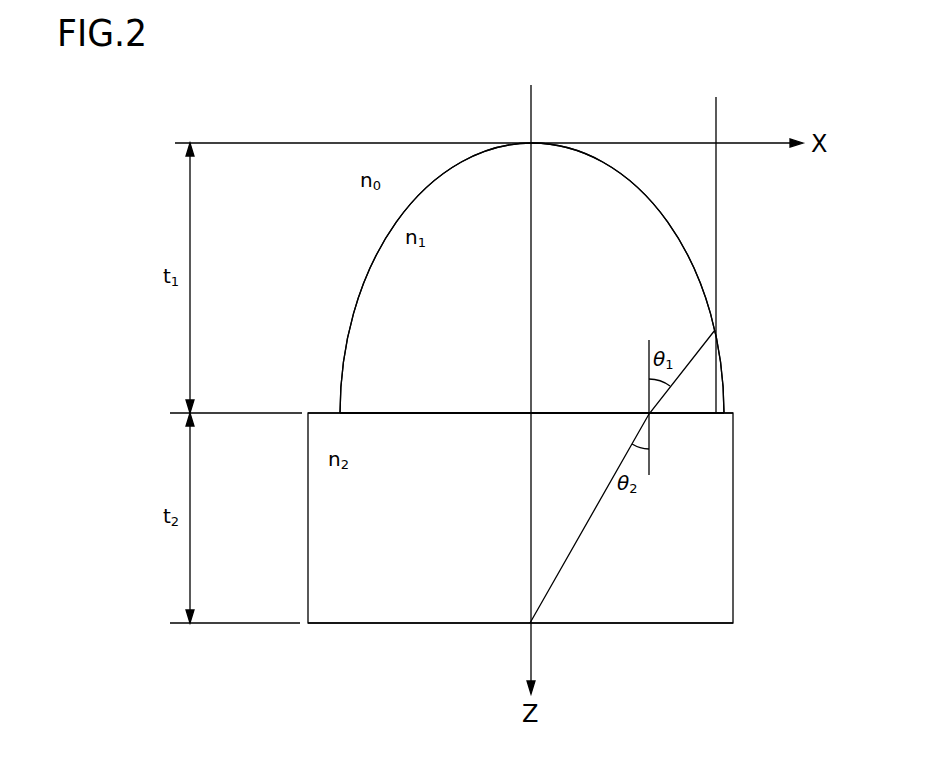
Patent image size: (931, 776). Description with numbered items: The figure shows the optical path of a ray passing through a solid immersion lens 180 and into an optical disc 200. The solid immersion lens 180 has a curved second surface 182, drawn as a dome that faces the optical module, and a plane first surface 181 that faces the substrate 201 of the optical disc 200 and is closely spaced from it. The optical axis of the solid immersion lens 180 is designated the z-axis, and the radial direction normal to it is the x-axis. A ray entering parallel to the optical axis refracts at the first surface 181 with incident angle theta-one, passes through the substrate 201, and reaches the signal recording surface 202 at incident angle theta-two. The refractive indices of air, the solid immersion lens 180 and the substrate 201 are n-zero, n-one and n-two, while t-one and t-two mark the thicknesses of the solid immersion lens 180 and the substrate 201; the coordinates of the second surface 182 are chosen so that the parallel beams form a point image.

The solid immersion lens 180 is at (346, 297).
The first surface 181 is at (320, 411).
The second surface 182 is at (382, 243).
The optical disc 200 is at (300, 540).
The substrate 201 is at (312, 490).
The signal recording surface 202 is at (322, 625).